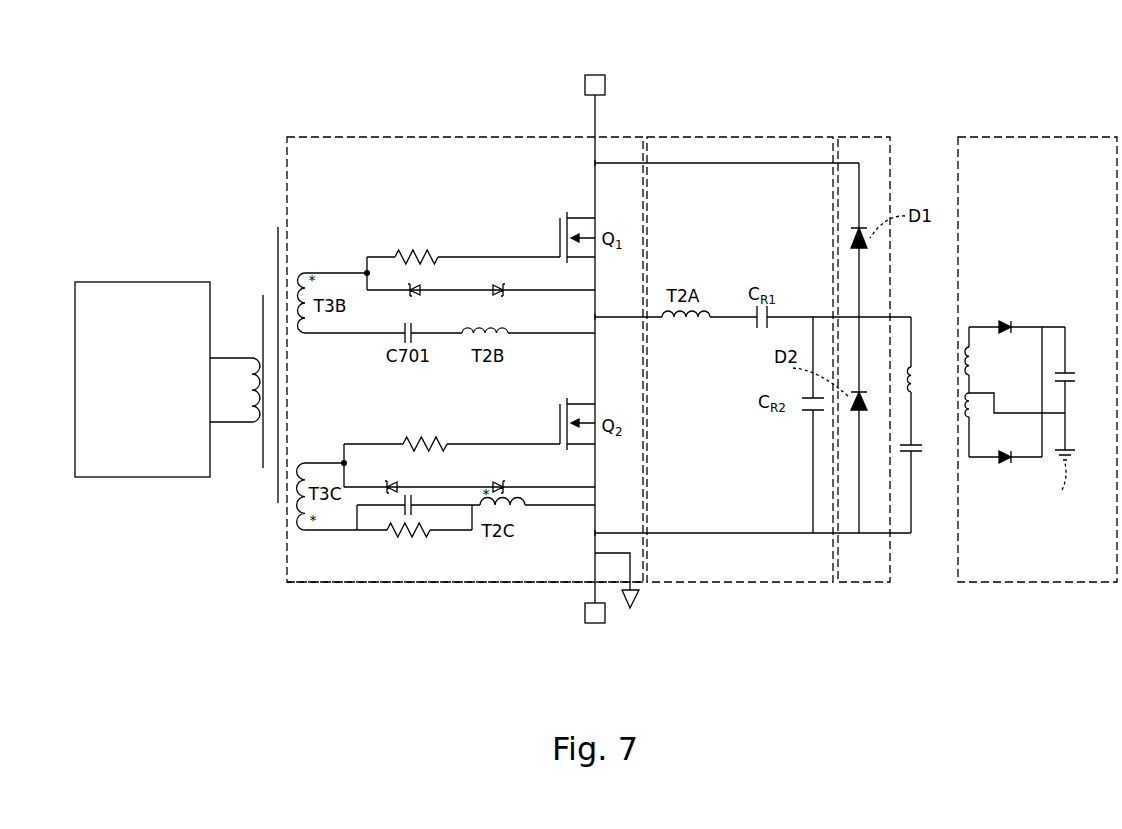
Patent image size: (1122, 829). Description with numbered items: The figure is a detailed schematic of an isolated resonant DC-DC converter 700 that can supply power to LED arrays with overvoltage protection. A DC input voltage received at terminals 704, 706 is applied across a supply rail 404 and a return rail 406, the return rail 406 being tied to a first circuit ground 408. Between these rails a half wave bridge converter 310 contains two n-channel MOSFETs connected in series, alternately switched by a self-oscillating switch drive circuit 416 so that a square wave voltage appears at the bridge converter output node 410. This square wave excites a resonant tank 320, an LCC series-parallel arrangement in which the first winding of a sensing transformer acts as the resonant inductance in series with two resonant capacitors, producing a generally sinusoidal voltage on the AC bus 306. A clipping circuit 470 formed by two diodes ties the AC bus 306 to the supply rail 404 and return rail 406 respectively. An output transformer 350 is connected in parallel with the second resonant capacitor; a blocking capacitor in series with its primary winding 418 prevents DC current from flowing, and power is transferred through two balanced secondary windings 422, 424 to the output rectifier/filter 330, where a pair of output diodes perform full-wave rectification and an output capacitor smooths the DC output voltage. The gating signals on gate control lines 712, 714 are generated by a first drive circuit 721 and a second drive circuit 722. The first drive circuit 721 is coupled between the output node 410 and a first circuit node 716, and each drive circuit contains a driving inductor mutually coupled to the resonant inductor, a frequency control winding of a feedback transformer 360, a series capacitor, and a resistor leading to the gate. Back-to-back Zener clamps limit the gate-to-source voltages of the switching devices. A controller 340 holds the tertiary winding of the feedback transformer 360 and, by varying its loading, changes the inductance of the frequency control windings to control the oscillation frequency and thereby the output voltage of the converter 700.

The resonant converter 700 is at (410, 627).
The input terminal 704 is at (595, 75).
The input terminal 706 is at (603, 622).
The half wave bridge converter 310 is at (423, 137).
The resonant tank 320 is at (733, 137).
The output rectifier/filter 330 is at (1048, 137).
The clipping circuit 470 is at (863, 137).
The supply rail 404 is at (594, 163).
The return rail 406 is at (595, 534).
The primary ground 408 is at (642, 600).
The bridge converter output node 410 is at (600, 317).
The self-oscillating switch drive circuit 416 is at (455, 399).
The primary winding 418 is at (913, 368).
The AC bus 306 is at (1000, 366).
The controller 340 is at (157, 400).
The output transformer 350 is at (918, 412).
The feedback transformer 360 is at (271, 287).
The gate control line 712 is at (520, 257).
The gate control line 714 is at (344, 463).
The first circuit node 716 is at (367, 273).
The first drive circuit 721 is at (402, 216).
The second drive circuit 722 is at (409, 538).
The secondary winding 422 is at (975, 353).
The secondary winding 424 is at (973, 412).